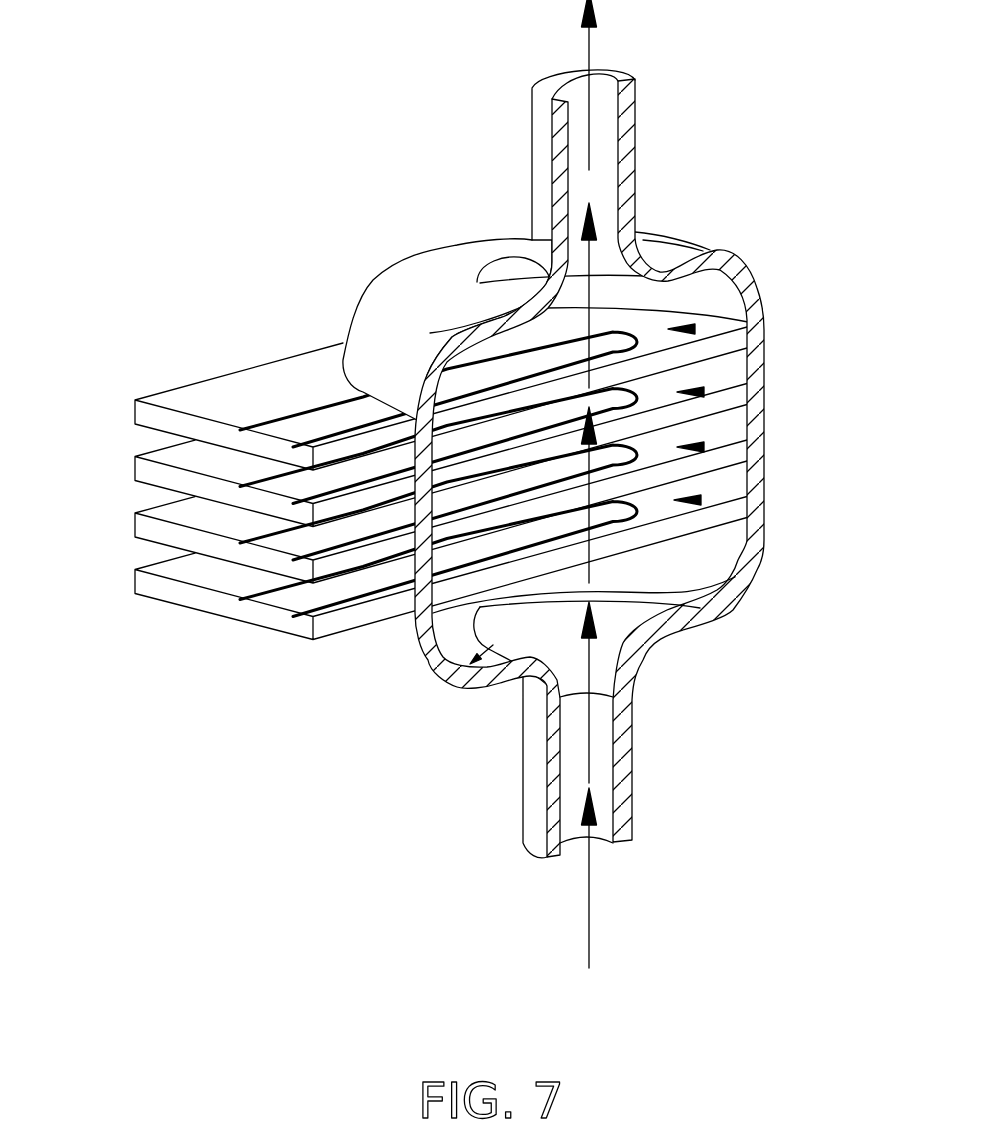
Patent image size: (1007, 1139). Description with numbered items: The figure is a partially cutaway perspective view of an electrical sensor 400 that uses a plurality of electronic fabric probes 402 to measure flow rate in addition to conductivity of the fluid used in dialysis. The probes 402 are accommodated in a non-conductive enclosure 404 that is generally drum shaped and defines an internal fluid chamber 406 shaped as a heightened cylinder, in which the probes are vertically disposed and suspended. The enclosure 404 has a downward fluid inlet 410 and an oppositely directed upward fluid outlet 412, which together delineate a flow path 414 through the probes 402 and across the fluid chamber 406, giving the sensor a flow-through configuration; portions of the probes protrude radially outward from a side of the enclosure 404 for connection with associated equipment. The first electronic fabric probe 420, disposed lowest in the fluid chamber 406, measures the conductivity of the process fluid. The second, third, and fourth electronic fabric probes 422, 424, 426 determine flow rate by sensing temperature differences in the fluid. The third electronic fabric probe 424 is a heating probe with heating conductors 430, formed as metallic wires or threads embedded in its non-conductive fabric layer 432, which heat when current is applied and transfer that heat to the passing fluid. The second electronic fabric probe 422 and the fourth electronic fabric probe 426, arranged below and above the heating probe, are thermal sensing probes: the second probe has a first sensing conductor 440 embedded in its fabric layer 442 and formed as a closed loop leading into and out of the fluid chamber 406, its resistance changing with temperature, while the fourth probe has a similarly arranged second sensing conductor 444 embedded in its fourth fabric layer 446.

The electrical sensor 400 is at (312, 115).
The electronic fabric probes 402 is at (113, 622).
The non-conductive enclosure 404 is at (390, 292).
The internal fluid chamber 406 is at (447, 678).
The fluid inlet 410 is at (530, 829).
The fluid outlet 412 is at (637, 152).
The flow path 414 is at (590, 898).
The first electronic fabric probe 420 is at (701, 500).
The second electronic fabric probe 422 is at (704, 447).
The third electronic fabric probe 424 is at (704, 392).
The fourth electronic fabric probe 426 is at (695, 329).
The heating conductors 430 is at (468, 392).
The non-conductive fabric layer 432 is at (398, 411).
The first sensing conductor 440 is at (480, 510).
The fabric layer 442 is at (178, 537).
The second sensing conductor 444 is at (495, 357).
The fourth fabric layer 446 is at (407, 308).